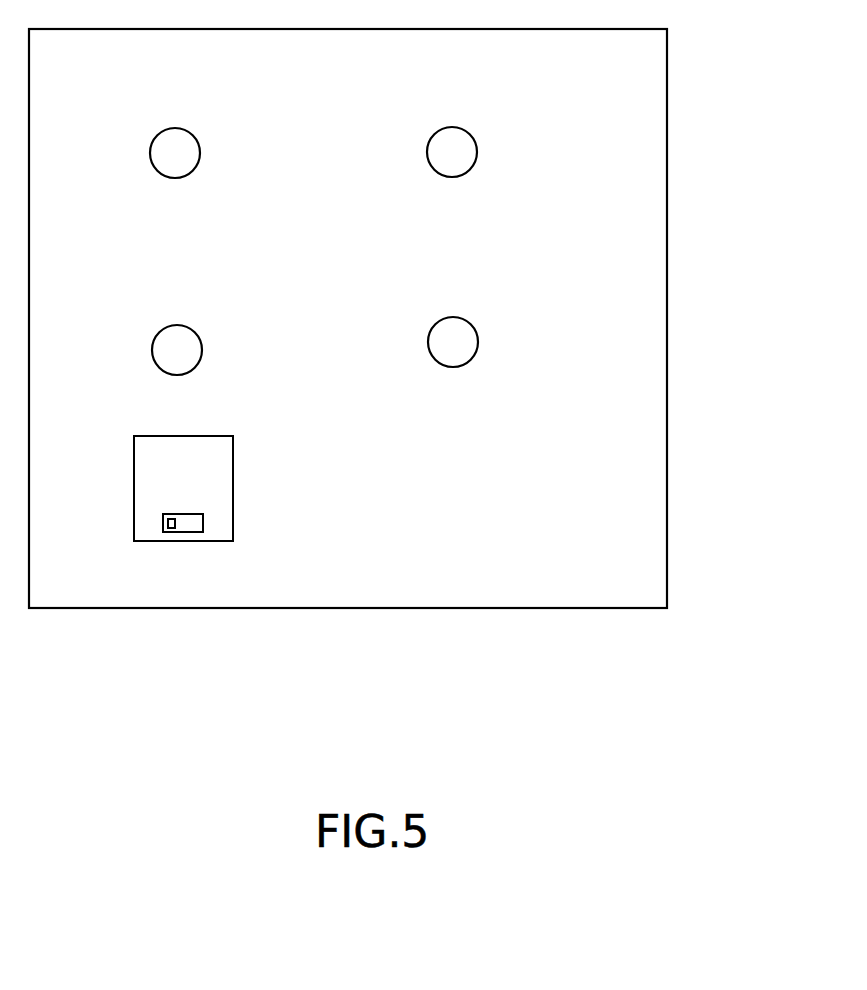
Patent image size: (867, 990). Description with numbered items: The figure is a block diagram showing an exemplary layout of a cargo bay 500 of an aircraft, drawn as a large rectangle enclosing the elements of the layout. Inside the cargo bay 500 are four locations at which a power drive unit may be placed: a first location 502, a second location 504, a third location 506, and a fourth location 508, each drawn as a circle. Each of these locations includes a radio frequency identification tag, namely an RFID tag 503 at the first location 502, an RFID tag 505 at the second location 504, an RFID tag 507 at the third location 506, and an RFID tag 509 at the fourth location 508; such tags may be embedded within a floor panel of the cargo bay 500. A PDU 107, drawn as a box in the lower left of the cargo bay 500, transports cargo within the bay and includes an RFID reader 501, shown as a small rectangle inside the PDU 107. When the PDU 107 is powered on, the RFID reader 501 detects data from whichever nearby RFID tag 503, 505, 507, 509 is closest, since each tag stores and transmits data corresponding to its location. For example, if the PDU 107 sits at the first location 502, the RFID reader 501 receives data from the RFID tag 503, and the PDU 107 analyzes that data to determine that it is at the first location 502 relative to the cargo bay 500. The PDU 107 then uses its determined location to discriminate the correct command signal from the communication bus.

The cargo bay 500 is at (667, 52).
The power drive unit 107 is at (182, 472).
The RFID reader 501 is at (203, 523).
The first location 502 is at (190, 133).
The RFID tag 503 is at (201, 155).
The second location 504 is at (192, 330).
The RFID tag 505 is at (203, 352).
The third location 506 is at (467, 132).
The RFID tag 507 is at (478, 154).
The fourth location 508 is at (468, 322).
The RFID tag 509 is at (479, 344).